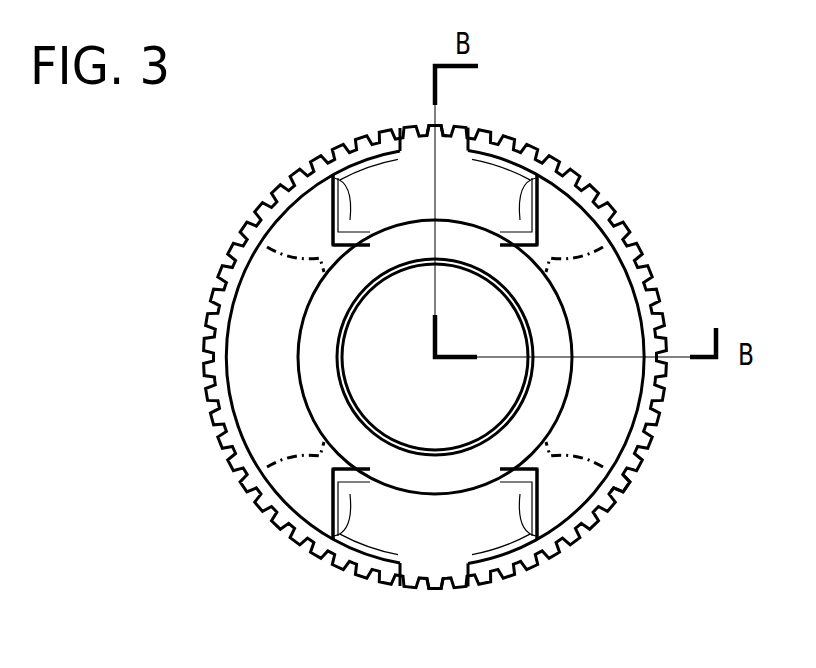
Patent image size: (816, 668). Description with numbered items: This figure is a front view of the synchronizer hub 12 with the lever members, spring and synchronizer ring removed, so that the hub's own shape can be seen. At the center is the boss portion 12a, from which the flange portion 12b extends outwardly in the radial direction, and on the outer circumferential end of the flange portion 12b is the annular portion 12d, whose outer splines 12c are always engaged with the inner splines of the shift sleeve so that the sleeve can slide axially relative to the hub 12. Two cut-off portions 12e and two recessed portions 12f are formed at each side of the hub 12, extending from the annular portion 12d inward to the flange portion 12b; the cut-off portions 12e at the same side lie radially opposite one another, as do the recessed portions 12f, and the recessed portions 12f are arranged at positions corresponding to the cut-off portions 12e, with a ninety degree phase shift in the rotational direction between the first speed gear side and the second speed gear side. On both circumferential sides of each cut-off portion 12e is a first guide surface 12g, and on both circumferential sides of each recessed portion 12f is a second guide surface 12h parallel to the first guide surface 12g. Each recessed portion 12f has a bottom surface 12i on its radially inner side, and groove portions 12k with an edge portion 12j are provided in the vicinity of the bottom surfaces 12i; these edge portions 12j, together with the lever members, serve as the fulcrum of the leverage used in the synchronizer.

The hub 12 is at (652, 246).
The boss portion 12a is at (324, 400).
The flange portion 12b is at (262, 302).
The outer splines 12c is at (624, 490).
The annular portion 12d is at (644, 440).
The cut-off portion 12e is at (419, 127).
The recessed portion 12f is at (360, 198).
The first guide surface 12g is at (399, 150).
The second guide surface 12h is at (334, 176).
The bottom surface 12i is at (401, 188).
The edge portion 12j is at (355, 233).
The groove portion 12k is at (334, 210).